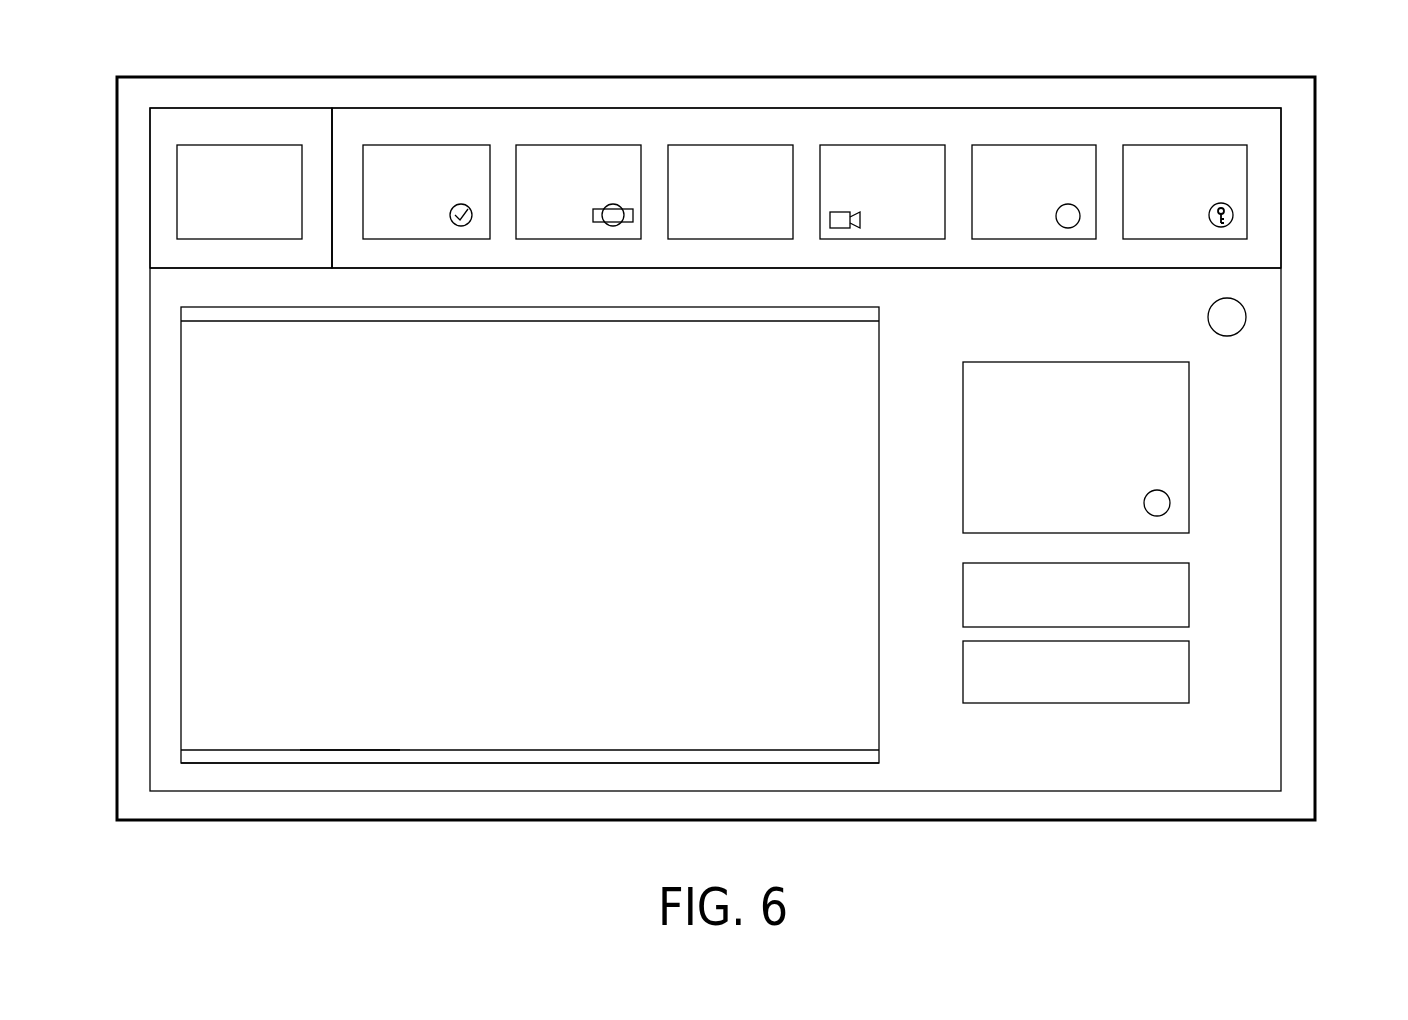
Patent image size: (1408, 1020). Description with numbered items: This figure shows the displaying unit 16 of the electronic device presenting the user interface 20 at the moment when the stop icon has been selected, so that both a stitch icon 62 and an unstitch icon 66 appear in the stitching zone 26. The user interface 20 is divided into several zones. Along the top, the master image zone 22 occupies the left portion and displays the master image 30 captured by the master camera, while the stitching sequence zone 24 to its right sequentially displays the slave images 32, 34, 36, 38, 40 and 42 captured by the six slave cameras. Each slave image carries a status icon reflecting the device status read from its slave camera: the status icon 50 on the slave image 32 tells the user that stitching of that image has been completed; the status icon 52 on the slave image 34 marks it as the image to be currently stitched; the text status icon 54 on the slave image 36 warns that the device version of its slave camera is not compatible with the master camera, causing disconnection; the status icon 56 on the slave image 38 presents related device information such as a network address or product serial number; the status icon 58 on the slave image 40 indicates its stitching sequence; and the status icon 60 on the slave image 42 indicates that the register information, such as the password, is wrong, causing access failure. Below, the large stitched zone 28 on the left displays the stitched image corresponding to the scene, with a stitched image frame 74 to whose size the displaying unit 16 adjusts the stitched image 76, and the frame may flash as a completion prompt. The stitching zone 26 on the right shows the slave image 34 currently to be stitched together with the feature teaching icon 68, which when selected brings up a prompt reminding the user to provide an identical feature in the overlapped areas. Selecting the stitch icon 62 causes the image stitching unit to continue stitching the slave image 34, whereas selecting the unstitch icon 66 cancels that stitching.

The displaying unit 16 is at (1316, 135).
The user interface 20 is at (172, 108).
The master image zone 22 is at (312, 137).
The stitching sequence zone 24 is at (502, 137).
The stitching zone 26 is at (1234, 415).
The stitched zone 28 is at (168, 712).
The master image 30 is at (242, 145).
The slave image 32 is at (423, 145).
The slave image 34 is at (577, 145).
The slave image 36 is at (723, 145).
The slave image 38 is at (882, 145).
The slave image 40 is at (1023, 145).
The slave image 42 is at (1177, 145).
The status icon 50 is at (461, 204).
The status icon 52 is at (613, 204).
The status icon 54 is at (767, 167).
The status icon 56 is at (923, 153).
The status icon 58 is at (1068, 204).
The status icon 60 is at (1221, 203).
The stitch icon 62 is at (1189, 586).
The unstitch icon 66 is at (1189, 660).
The feature teaching icon 68 is at (1246, 314).
The stitched image frame 74 is at (278, 763).
The stitched image 76 is at (327, 750).